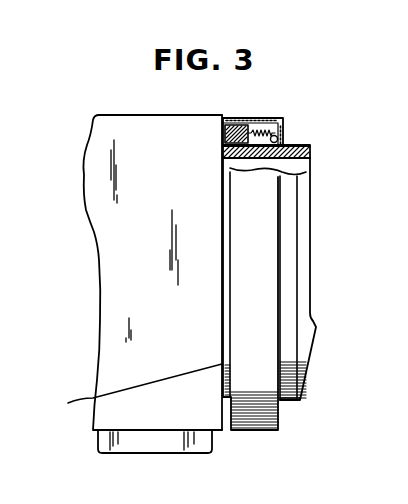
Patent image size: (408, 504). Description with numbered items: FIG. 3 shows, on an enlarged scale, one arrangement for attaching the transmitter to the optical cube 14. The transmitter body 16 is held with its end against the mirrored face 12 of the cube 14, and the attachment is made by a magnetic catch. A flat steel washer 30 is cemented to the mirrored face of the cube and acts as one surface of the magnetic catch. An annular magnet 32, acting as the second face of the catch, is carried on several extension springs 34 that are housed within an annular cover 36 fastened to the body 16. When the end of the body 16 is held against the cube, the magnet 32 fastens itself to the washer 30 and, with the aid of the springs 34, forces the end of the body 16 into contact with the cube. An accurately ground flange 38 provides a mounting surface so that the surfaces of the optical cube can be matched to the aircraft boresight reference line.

The mirrored face 12 is at (132, 386).
The optical cube 14 is at (158, 127).
The body 16 is at (310, 150).
The flat steel washer 30 is at (222, 119).
The annular magnet 32 is at (244, 118).
The extension springs 34 is at (280, 140).
The annular cover 36 is at (280, 118).
The flange 38 is at (102, 437).